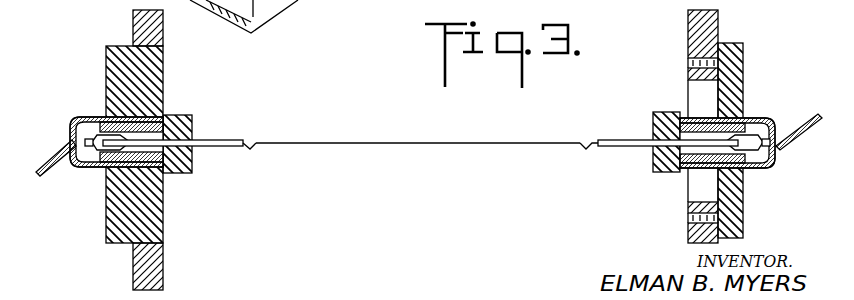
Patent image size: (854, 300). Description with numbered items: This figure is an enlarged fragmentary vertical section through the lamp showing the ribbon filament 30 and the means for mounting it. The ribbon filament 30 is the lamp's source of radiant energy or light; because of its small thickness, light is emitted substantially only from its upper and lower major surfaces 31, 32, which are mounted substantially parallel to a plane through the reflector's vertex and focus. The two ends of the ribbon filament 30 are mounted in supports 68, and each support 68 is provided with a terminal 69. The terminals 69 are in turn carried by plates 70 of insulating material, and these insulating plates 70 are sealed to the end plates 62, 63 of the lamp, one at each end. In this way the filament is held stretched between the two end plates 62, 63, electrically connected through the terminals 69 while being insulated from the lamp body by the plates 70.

The ribbon filament 30 is at (465, 127).
The upper surface 31 is at (302, 143).
The lower surface 32 is at (477, 145).
The end plate 62 is at (133, 24).
The end plate 63 is at (720, 22).
The support 68 is at (222, 150).
The terminal 69 is at (182, 173).
The plate of insulating material 70 is at (106, 70).